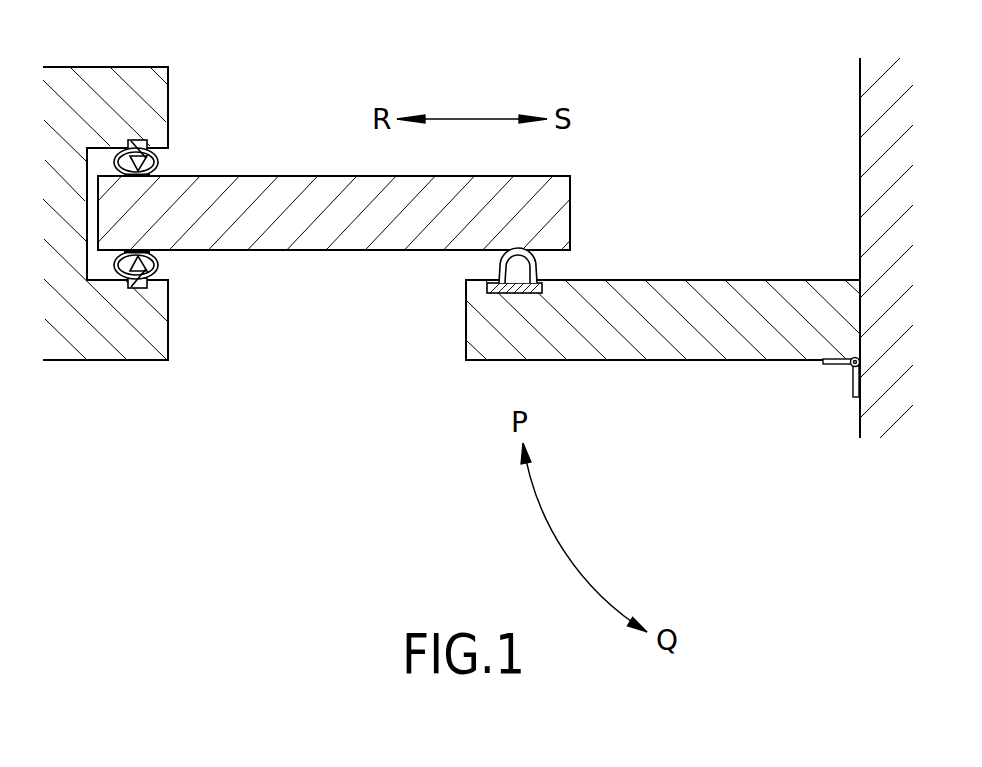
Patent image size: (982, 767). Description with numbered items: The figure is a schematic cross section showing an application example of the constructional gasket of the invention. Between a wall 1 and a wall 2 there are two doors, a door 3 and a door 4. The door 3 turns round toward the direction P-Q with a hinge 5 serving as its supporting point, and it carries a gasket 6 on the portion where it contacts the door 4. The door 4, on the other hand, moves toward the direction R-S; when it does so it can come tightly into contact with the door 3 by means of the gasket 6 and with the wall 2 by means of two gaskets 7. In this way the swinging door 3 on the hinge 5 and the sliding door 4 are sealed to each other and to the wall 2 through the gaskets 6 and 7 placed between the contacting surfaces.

The wall 1 is at (860, 180).
The wall 2 is at (108, 67).
The door 3 is at (712, 360).
The door 4 is at (328, 250).
The hinge 5 is at (853, 368).
The gasket 6 is at (538, 272).
The gasket 7 is at (158, 163).